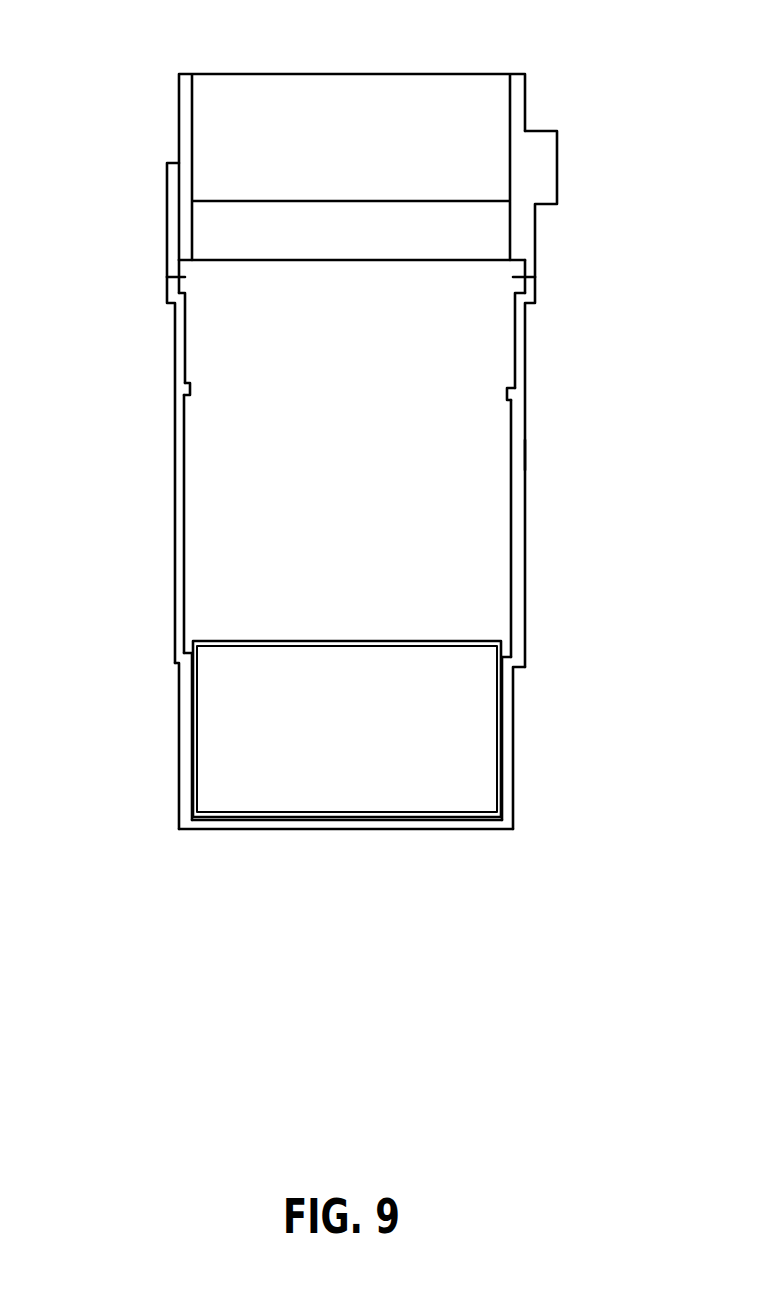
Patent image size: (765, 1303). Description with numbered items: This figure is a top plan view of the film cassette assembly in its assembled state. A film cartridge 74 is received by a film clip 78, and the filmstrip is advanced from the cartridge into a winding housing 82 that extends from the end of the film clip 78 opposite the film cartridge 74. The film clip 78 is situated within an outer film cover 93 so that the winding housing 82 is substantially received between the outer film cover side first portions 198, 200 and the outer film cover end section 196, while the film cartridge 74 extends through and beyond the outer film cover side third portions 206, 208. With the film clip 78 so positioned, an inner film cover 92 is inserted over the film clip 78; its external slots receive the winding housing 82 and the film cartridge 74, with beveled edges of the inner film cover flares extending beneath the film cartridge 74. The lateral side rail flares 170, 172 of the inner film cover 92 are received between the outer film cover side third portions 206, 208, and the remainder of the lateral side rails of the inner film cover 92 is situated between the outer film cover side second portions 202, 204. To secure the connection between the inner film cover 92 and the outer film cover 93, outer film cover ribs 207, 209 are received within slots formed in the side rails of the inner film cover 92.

The film clip 78 is at (365, 97).
The film cartridge 74 is at (331, 240).
The outer film cover side third portion 208 is at (169, 247).
The outer film cover side third portion 206 is at (537, 242).
The lateral side rail flare 170 is at (185, 275).
The lateral side rail flare 172 is at (538, 277).
The outer film cover side second portion 204 is at (174, 600).
The outer film cover side second portion 202 is at (527, 587).
The outer film cover rib 209 is at (193, 382).
The outer film cover rib 207 is at (505, 390).
The outer film cover 93 is at (527, 455).
The inner film cover 92 is at (363, 461).
The outer film cover side first portion 200 is at (181, 762).
The outer film cover side first portion 198 is at (516, 752).
The outer film cover end section 196 is at (267, 831).
The winding housing 82 is at (408, 795).